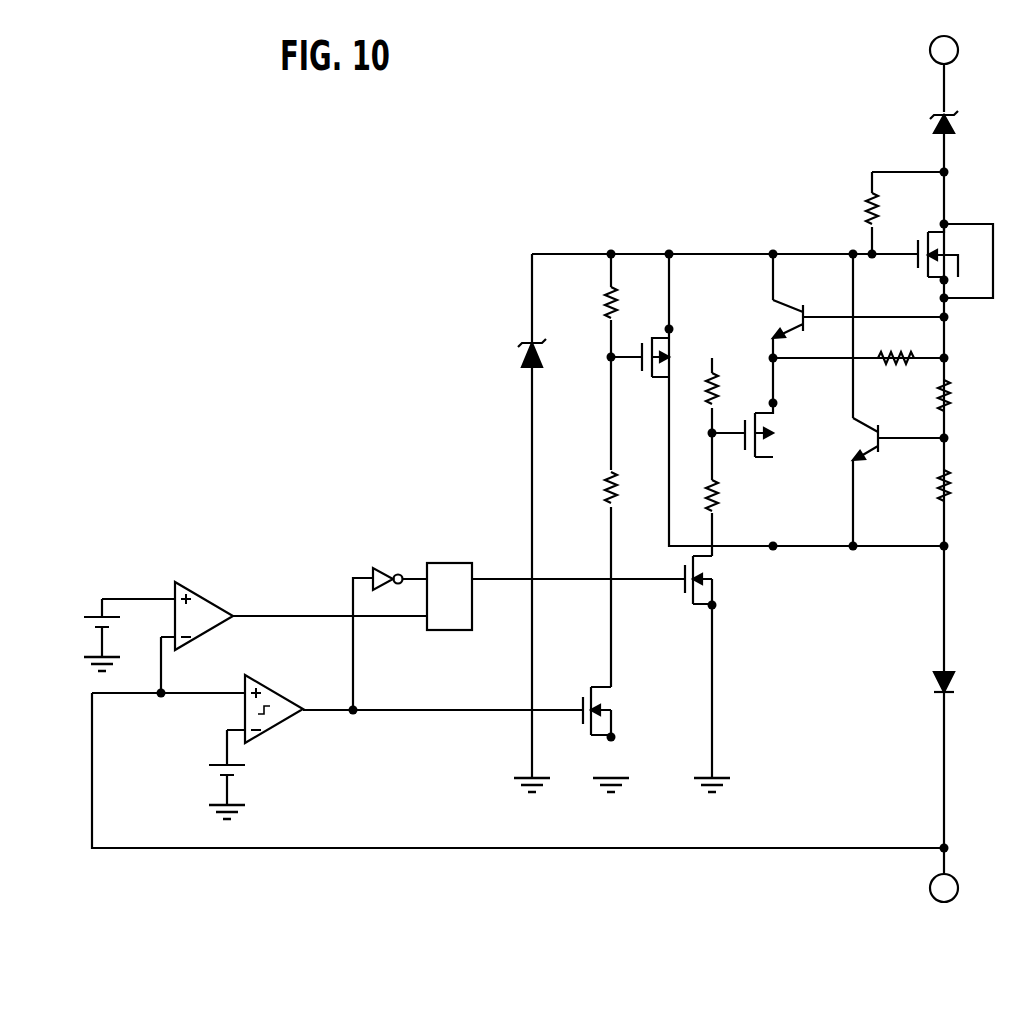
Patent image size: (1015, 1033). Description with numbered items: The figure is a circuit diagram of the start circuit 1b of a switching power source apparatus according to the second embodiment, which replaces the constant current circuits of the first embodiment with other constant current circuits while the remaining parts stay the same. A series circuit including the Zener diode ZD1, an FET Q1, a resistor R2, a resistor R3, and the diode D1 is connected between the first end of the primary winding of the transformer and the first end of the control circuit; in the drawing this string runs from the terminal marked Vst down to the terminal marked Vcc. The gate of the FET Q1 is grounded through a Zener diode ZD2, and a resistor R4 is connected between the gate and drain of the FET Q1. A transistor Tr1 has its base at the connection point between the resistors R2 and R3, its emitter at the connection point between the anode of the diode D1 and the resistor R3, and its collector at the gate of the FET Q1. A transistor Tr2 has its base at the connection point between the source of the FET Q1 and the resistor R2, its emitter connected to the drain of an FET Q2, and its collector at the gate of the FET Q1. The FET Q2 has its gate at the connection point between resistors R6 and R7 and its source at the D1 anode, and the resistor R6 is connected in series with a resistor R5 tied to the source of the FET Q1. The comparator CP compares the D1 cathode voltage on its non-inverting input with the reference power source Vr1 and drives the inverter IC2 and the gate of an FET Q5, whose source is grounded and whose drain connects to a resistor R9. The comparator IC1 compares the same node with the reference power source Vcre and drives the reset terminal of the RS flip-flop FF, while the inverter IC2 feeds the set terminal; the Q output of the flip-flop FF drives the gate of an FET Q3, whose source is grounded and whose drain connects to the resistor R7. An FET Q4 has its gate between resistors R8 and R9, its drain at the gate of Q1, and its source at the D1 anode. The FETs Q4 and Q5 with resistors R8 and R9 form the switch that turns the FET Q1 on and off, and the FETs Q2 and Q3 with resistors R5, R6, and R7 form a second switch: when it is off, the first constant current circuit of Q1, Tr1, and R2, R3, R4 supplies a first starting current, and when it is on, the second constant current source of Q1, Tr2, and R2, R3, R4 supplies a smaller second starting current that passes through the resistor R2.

The start circuit 1b is at (571, 176).
The start-up voltage terminal Vst is at (964, 51).
The Zener diode ZD1 is at (967, 123).
The resistor R4 is at (888, 209).
The FET Q1 is at (955, 261).
The transistor Tr2 is at (775, 319).
The resistor R5 is at (896, 342).
The resistor R2 is at (959, 397).
The transistor Tr1 is at (875, 424).
The resistor R3 is at (959, 487).
The diode D1 is at (958, 681).
The supply voltage terminal Vcc is at (966, 889).
The FET Q4 is at (660, 350).
The resistor R6 is at (698, 391).
The FET Q2 is at (764, 430).
The resistor R7 is at (698, 493).
The resistor R8 is at (597, 302).
The resistor R9 is at (596, 489).
The Zener diode ZD2 is at (511, 358).
The FET Q3 is at (720, 580).
The FET Q5 is at (618, 712).
The comparator IC1 is at (217, 602).
The reference power source Vcre is at (82, 628).
The comparator CP is at (269, 688).
The reference power source Vr1 is at (244, 767).
The inverter IC2 is at (379, 566).
The RS flip-flop FF is at (452, 563).